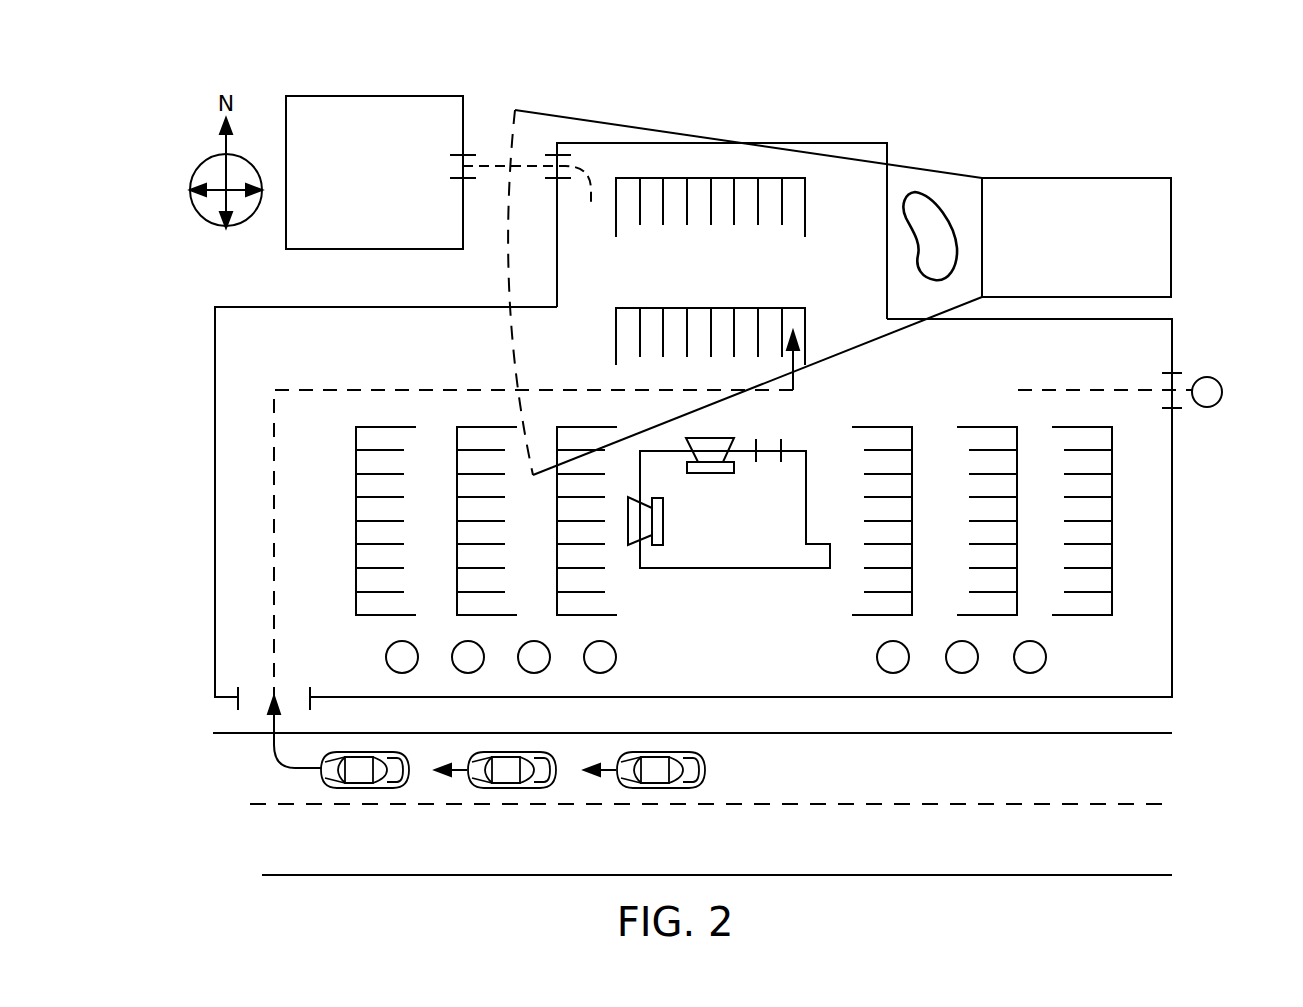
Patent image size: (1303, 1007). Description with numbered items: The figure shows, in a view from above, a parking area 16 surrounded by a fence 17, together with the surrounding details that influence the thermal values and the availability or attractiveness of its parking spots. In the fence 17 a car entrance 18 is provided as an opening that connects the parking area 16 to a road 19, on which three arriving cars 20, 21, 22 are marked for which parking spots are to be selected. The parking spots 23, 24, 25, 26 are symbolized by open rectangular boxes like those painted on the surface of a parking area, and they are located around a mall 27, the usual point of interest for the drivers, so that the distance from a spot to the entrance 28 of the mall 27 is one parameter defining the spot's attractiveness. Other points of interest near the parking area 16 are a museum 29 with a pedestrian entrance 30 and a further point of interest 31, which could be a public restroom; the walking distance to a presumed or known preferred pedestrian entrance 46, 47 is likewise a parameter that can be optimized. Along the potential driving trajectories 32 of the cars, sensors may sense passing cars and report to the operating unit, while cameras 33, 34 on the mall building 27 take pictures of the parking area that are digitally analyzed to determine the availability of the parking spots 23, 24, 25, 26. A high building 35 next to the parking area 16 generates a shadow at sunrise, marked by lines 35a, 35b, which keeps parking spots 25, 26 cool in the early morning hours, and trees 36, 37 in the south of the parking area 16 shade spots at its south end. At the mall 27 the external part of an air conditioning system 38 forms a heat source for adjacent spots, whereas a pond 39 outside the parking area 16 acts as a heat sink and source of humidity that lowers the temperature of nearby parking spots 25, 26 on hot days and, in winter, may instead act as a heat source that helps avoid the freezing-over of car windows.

The parking area 16 is at (1010, 90).
The fence 17 is at (215, 606).
The car entrance 18 is at (254, 690).
The road 19 is at (432, 876).
The arriving car 20 is at (368, 790).
The arriving car 21 is at (512, 790).
The arriving car 22 is at (660, 790).
The parking spot 23 is at (365, 437).
The parking spot 24 is at (365, 462).
The parking spot 25 is at (768, 318).
The parking spot 26 is at (795, 318).
The mall 27 is at (733, 568).
The entrance of the mall 28 is at (769, 453).
The museum 29 is at (363, 96).
The pedestrian entrance 30 is at (470, 156).
The point of interest 31 is at (1207, 377).
The driving trajectory 32 is at (274, 512).
The camera 33 is at (664, 533).
The camera 34 is at (710, 475).
The high building 35 is at (1078, 178).
The shadow line 35a is at (848, 158).
The shadow line 35b is at (852, 350).
The tree 36 is at (616, 657).
The tree 37 is at (877, 657).
The air conditioning system 38 is at (812, 555).
The pond 39 is at (933, 220).
The preferred pedestrian entrance 46 is at (560, 155).
The preferred pedestrian entrance 47 is at (1174, 402).